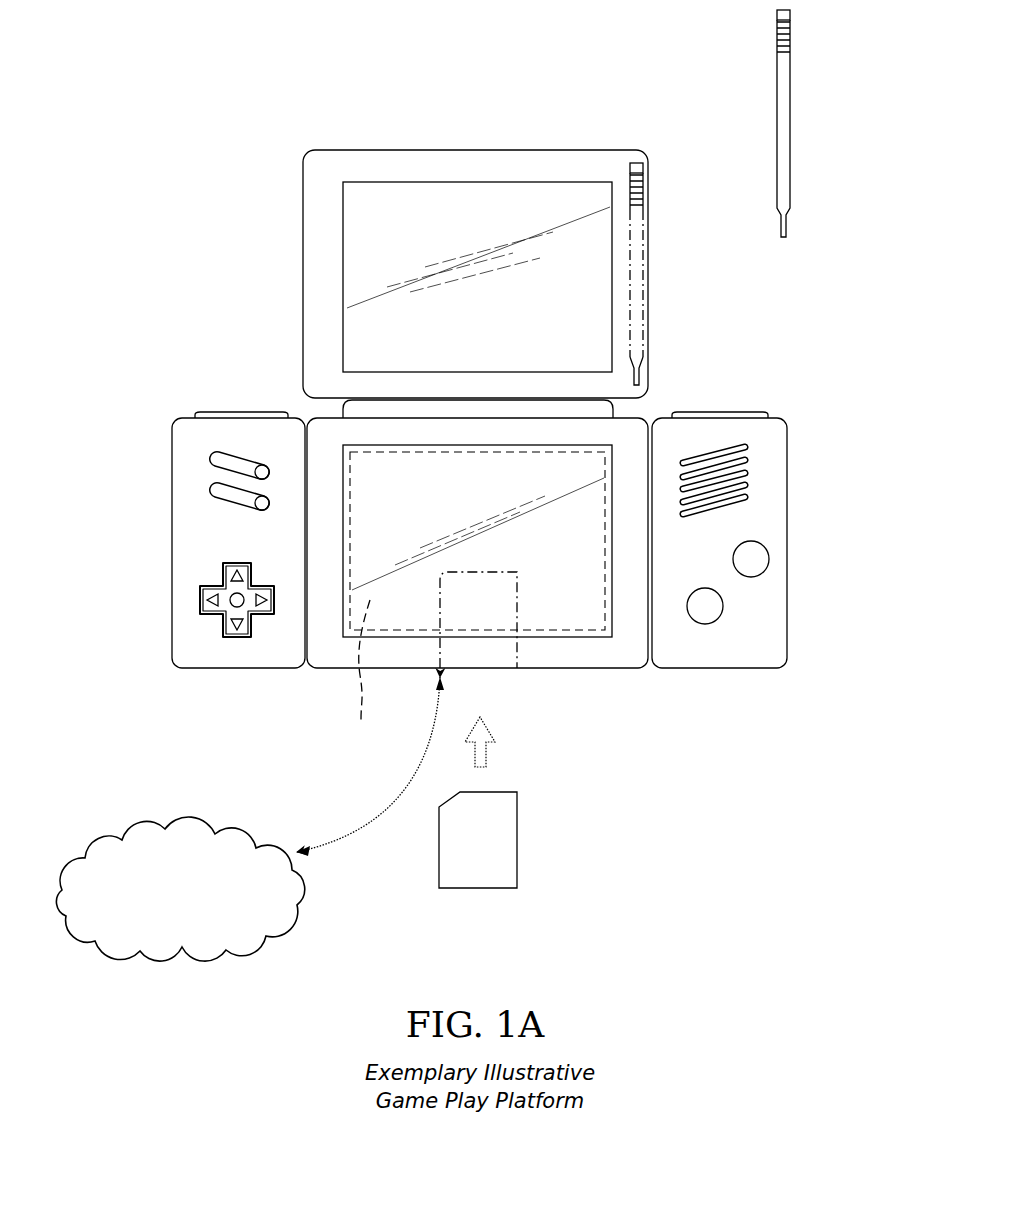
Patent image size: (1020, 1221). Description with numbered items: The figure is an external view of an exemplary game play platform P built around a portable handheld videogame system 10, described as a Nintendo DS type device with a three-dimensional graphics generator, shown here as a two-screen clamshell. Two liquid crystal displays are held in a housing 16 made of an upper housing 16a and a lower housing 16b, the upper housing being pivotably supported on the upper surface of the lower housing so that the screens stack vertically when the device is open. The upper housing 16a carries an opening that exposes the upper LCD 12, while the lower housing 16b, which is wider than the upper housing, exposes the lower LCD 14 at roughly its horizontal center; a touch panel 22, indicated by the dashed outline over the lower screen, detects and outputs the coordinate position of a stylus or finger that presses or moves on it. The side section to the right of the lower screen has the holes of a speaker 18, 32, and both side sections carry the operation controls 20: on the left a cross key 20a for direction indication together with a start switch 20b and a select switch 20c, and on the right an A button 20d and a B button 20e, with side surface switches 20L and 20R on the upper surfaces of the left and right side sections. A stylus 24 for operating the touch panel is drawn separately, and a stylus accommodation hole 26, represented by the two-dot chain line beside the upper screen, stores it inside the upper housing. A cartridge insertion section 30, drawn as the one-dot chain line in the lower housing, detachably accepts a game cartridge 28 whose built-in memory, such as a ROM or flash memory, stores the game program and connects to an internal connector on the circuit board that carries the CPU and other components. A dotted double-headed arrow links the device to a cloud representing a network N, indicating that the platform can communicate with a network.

The game play platform P is at (277, 137).
The system 10 is at (366, 30).
The second LCD 12 is at (365, 240).
The operation switch section 14 is at (587, 637).
The stylus 16 is at (753, 300).
The upper housing 16a is at (650, 323).
The lower housing 16b is at (637, 415).
The housing 18 is at (743, 473).
The speaker 32 is at (714, 480).
The input controls 20 is at (193, 440).
The left shoulder button 20L is at (240, 410).
The right shoulder button 20R is at (737, 412).
The cross-switch direction pad 20a is at (202, 593).
The start button 20b is at (260, 473).
The select button 20c is at (262, 502).
The A button 20d is at (768, 552).
The B button 20e is at (723, 605).
The microphone 22 is at (356, 677).
The stylus 24 is at (787, 115).
The stylus storage slot 26 is at (635, 223).
The game card 28 is at (512, 829).
The game card slot 30 is at (480, 667).
The network N is at (173, 953).